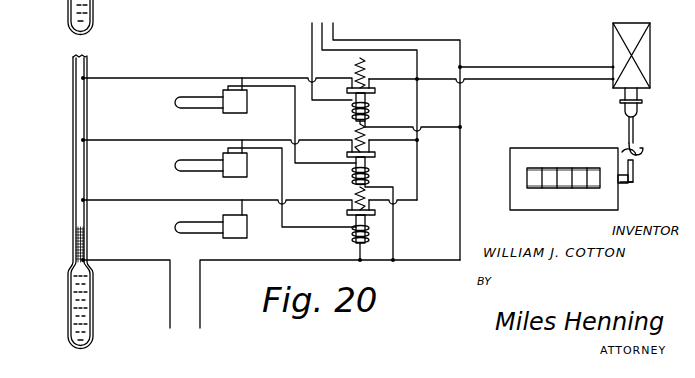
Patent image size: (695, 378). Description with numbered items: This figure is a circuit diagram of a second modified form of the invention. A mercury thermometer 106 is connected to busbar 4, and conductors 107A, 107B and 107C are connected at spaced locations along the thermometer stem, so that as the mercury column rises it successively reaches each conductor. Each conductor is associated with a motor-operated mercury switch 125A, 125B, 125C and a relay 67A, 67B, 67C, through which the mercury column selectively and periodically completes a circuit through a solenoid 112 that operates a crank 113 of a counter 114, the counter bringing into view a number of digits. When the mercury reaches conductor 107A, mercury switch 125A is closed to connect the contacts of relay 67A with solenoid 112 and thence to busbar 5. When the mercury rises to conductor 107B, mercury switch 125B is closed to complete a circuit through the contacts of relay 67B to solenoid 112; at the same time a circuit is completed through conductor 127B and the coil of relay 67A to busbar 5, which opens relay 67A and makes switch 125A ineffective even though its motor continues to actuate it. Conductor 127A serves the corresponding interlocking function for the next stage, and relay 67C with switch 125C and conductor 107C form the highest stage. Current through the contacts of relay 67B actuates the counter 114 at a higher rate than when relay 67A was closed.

The mercury thermometer 106 is at (68, 322).
The busbar 4 is at (170, 302).
The busbar 5 is at (200, 292).
The conductor 107A is at (120, 201).
The conductor 107B is at (120, 141).
The conductor 107C is at (120, 79).
The mercury switch 125A is at (192, 229).
The mercury switch 125B is at (192, 167).
The mercury switch 125C is at (192, 105).
The conductor 127A is at (280, 178).
The conductor 127B is at (293, 110).
The relay 67A is at (375, 218).
The relay 67B is at (375, 155).
The relay 67C is at (374, 92).
The solenoid 112 is at (643, 53).
The crank 113 is at (635, 162).
The counter 114 is at (572, 152).